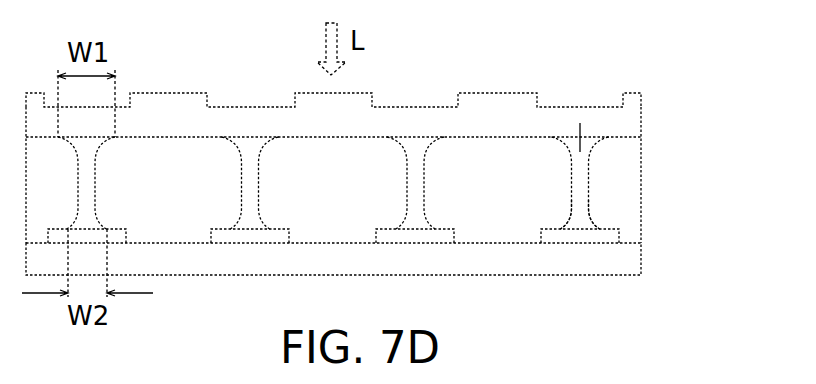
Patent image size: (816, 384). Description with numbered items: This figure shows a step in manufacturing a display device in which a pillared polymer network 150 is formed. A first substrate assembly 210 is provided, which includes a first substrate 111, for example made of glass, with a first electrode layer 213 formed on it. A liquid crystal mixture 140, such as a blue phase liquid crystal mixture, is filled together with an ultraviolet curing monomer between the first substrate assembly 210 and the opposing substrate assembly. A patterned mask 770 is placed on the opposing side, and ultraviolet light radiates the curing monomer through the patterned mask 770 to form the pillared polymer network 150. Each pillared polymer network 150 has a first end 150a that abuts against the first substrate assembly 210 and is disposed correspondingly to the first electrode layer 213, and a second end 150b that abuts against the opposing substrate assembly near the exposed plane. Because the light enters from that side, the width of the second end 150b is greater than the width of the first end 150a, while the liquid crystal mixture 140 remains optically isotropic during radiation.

The patterned mask 770 is at (641, 100).
The second end 150b is at (582, 138).
The pillared polymer network 150 is at (588, 190).
The first end 150a is at (582, 229).
The first electrode layer 213 is at (608, 237).
The first substrate 111 is at (628, 258).
The first substrate assembly 210 is at (717, 220).
The liquid crystal mixture 140 is at (490, 213).